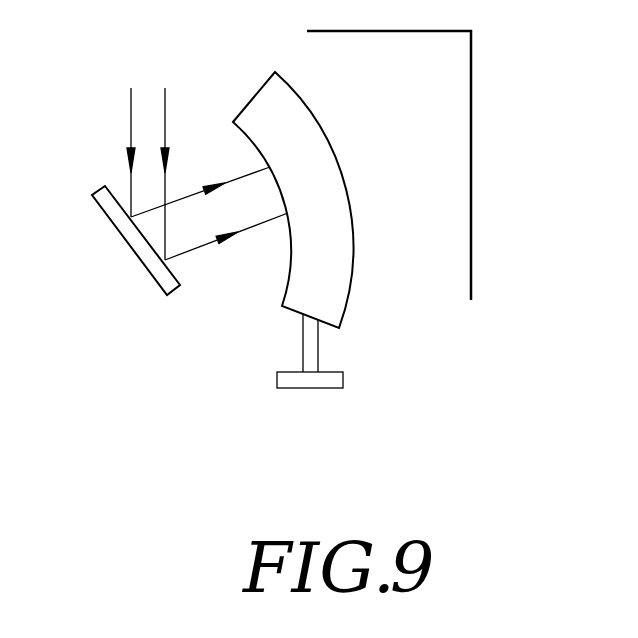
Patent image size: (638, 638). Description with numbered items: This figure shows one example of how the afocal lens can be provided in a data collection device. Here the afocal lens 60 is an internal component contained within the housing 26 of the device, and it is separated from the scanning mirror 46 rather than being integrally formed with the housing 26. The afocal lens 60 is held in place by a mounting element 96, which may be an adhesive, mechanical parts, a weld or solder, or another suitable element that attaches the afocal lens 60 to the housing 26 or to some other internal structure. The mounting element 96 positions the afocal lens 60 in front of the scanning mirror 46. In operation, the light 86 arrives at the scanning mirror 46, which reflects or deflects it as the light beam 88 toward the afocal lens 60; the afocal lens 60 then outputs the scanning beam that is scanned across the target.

The housing 26 is at (471, 163).
The scanning mirror 46 is at (103, 222).
The afocal lens 60 is at (327, 137).
The light 86 is at (128, 125).
The light beam 88 is at (203, 247).
The mounting element 96 is at (343, 380).